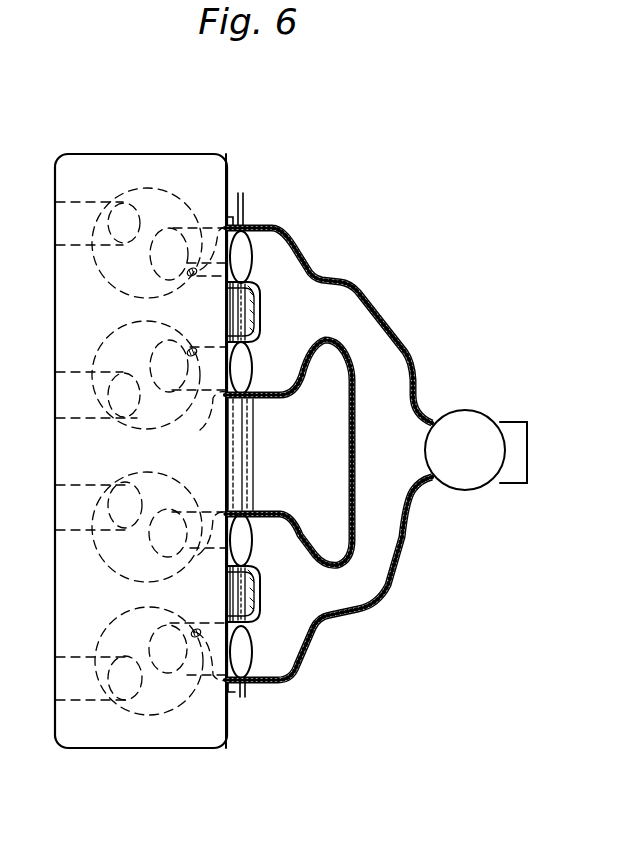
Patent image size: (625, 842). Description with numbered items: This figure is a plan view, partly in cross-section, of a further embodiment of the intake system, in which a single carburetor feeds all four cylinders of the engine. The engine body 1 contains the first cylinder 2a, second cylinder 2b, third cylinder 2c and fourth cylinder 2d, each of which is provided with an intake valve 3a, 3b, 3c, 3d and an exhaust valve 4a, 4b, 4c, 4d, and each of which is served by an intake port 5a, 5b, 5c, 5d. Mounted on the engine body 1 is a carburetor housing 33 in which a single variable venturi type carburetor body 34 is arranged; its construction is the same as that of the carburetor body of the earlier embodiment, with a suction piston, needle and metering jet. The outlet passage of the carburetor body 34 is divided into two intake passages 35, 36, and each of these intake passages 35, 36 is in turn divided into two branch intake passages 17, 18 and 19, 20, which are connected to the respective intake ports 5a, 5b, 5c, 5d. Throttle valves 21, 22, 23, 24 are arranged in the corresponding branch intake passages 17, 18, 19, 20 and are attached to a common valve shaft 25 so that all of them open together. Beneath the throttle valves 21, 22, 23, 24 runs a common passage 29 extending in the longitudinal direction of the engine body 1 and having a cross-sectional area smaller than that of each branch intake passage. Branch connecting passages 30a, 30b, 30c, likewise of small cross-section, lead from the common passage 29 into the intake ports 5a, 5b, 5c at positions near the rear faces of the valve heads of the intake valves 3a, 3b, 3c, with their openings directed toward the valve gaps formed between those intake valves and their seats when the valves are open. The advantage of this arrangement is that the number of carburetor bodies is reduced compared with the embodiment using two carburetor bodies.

The engine body 1 is at (234, 157).
The No. 1 cylinder 2a is at (100, 267).
The No. 2 cylinder 2b is at (120, 427).
The No. 3 cylinder 2c is at (105, 560).
The No. 4 cylinder 2d is at (142, 707).
The intake valve 3a is at (183, 230).
The intake valve 3b is at (176, 345).
The intake valve 3c is at (180, 488).
The intake valve 3d is at (176, 626).
The exhaust valve 4a is at (127, 207).
The exhaust valve 4b is at (110, 362).
The exhaust valve 4c is at (125, 492).
The exhaust valve 4d is at (112, 640).
The intake port 5a is at (214, 228).
The intake port 5b is at (214, 400).
The intake port 5c is at (210, 516).
The intake port 5d is at (214, 682).
The branch intake passage 17 is at (256, 260).
The branch intake passage 18 is at (265, 363).
The branch intake passage 19 is at (257, 535).
The branch intake passage 20 is at (260, 647).
The throttle valve 21 is at (252, 257).
The throttle valve 22 is at (262, 404).
The throttle valve 23 is at (275, 545).
The throttle valve 24 is at (255, 665).
The common valve shaft 25 is at (245, 455).
The common passage 29 is at (250, 437).
The branch connecting passage 30a is at (220, 312).
The branch connecting passage 30b is at (211, 312).
The branch connecting passage 30c is at (221, 594).
The carburetor housing 33 is at (371, 292).
The variable venturi type carburetor body 34 is at (470, 425).
The intake passage 35 is at (368, 343).
The intake passage 36 is at (377, 570).